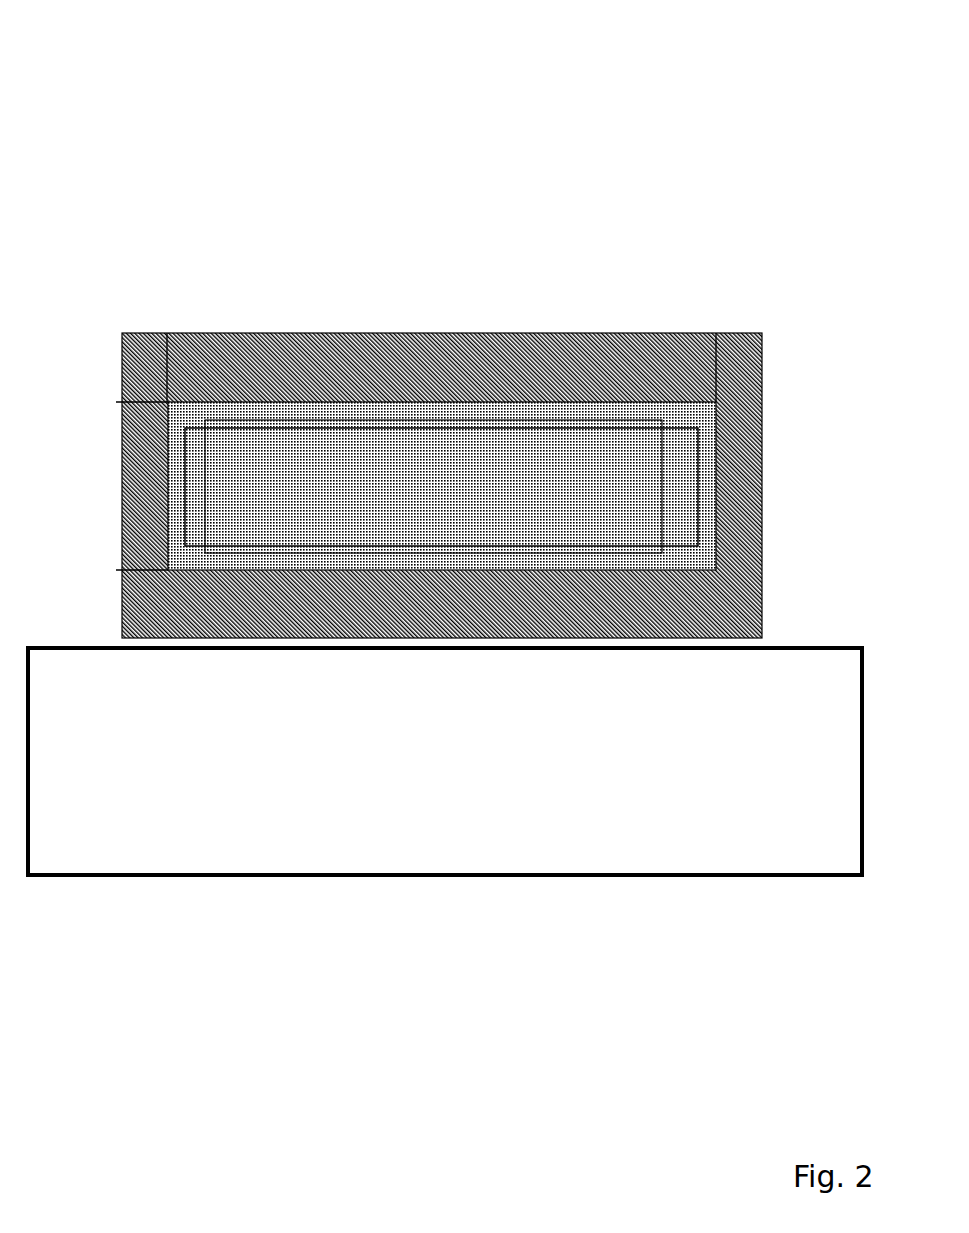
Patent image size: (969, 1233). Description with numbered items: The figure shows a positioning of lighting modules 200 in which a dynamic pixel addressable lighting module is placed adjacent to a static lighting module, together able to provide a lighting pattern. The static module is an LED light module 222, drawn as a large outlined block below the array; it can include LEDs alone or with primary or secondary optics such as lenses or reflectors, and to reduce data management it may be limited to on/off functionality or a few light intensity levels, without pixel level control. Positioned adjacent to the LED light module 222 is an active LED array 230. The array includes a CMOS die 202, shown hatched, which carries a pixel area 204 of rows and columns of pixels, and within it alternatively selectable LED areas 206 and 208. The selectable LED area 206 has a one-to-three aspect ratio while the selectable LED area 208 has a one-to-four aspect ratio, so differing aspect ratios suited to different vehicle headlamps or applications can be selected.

The lighting modules 200 is at (722, 77).
The CMOS die 202 is at (742, 364).
The pixel area 204 is at (711, 412).
The selectable LED area 206 is at (682, 513).
The selectable LED area 208 is at (697, 556).
The LED light module 222 is at (446, 849).
The active LED array 230 is at (603, 326).